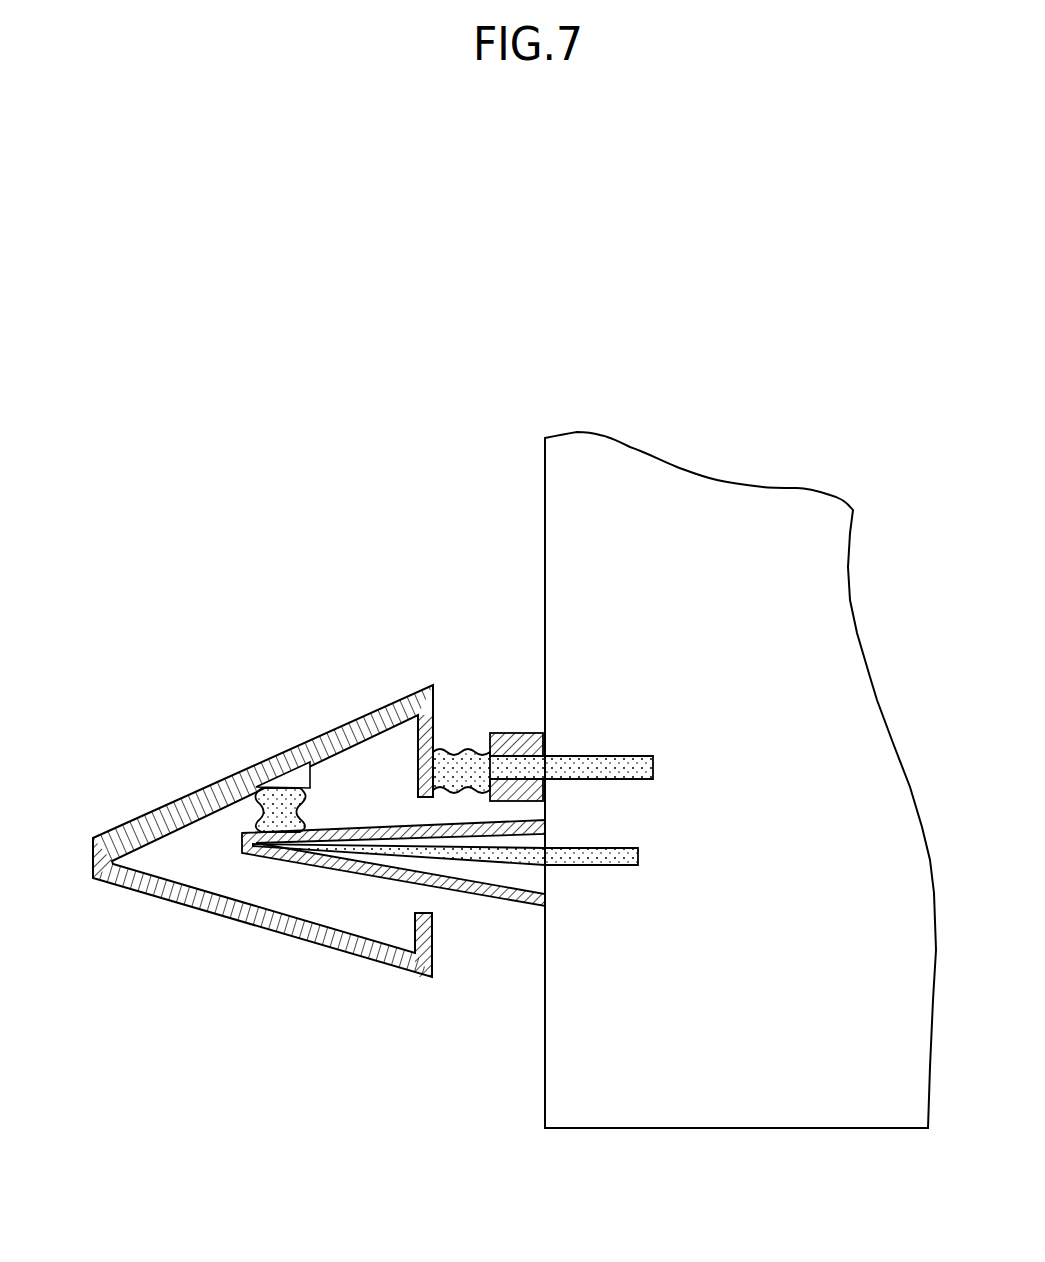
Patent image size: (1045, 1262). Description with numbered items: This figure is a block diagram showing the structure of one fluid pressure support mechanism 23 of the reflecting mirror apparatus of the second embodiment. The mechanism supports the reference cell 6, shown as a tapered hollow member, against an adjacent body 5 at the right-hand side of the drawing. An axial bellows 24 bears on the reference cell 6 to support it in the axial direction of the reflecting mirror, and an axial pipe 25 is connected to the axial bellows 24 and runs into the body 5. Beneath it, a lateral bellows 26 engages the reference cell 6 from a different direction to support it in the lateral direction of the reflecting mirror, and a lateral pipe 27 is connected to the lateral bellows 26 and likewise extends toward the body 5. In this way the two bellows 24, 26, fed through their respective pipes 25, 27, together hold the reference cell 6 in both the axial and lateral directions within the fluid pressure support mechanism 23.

The main body 5 is at (676, 465).
The reference cell 6 is at (190, 908).
The fluid pressure support mechanism 23 is at (144, 408).
The axial bellows 24 is at (457, 750).
The axial pipe 25 is at (590, 755).
The lateral bellows 26 is at (257, 808).
The lateral pipe 27 is at (486, 867).